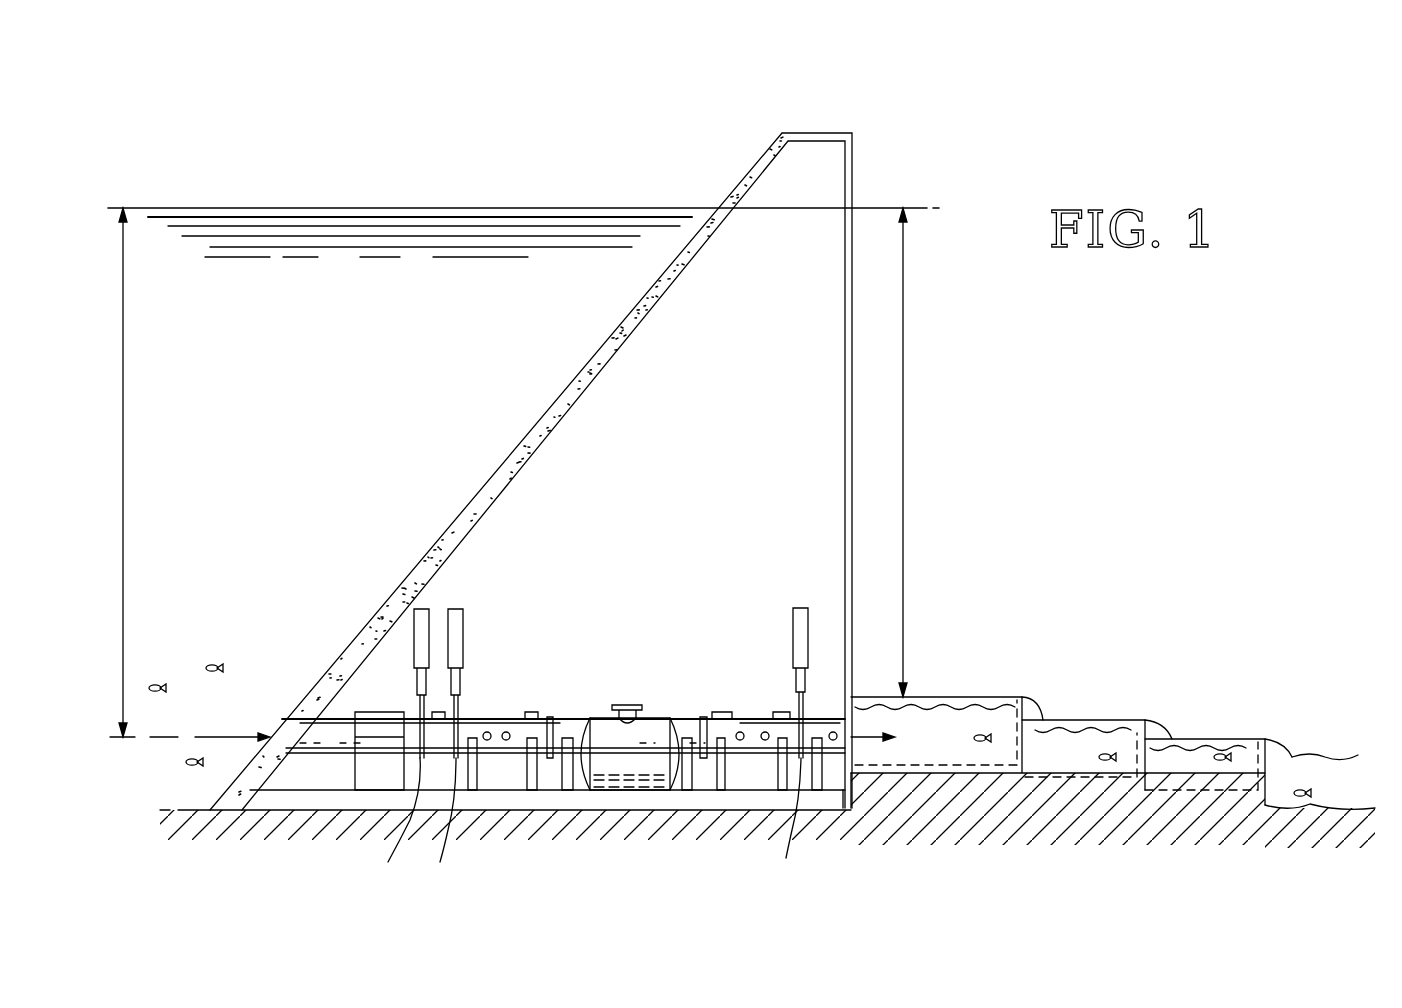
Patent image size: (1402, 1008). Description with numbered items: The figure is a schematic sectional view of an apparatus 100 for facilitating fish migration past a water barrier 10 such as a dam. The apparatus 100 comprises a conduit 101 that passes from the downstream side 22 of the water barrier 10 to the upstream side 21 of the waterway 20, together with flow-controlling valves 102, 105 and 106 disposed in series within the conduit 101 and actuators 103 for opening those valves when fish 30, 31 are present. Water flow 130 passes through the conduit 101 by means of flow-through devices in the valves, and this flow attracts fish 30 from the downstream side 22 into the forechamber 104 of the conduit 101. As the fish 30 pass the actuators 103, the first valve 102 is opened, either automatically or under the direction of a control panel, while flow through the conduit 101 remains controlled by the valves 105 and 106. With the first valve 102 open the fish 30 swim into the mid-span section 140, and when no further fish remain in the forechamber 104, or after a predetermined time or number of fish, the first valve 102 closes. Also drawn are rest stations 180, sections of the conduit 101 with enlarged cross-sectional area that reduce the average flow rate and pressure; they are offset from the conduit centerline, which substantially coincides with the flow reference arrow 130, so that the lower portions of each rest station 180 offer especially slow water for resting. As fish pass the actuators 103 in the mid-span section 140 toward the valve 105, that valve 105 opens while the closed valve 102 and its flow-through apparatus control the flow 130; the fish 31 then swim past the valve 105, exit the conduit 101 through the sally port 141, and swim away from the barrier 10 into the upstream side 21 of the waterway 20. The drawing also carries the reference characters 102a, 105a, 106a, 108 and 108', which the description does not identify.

The water barrier 10 is at (520, 444).
The waterway 20 is at (563, 192).
The upstream side 21 is at (385, 258).
The downstream side 22 is at (1322, 594).
The fish 30 is at (984, 735).
The fish 31 is at (206, 667).
The apparatus 100 is at (952, 508).
The conduit 101 is at (500, 753).
The first valve 102 is at (795, 625).
The sensor lead 102a is at (780, 825).
The actuators 103 is at (506, 732).
The forechamber 104 is at (830, 760).
The valve 105 is at (463, 625).
The sensor lead 105a is at (442, 826).
The valve 106 is at (414, 622).
The sensor lead 106a is at (381, 826).
The downstream head height 108 is at (954, 452).
The upstream head height 108' is at (166, 472).
The flow 130 is at (222, 737).
The mid-span section 140 is at (740, 758).
The sally port 141 is at (305, 753).
The rest stations 180 is at (648, 718).